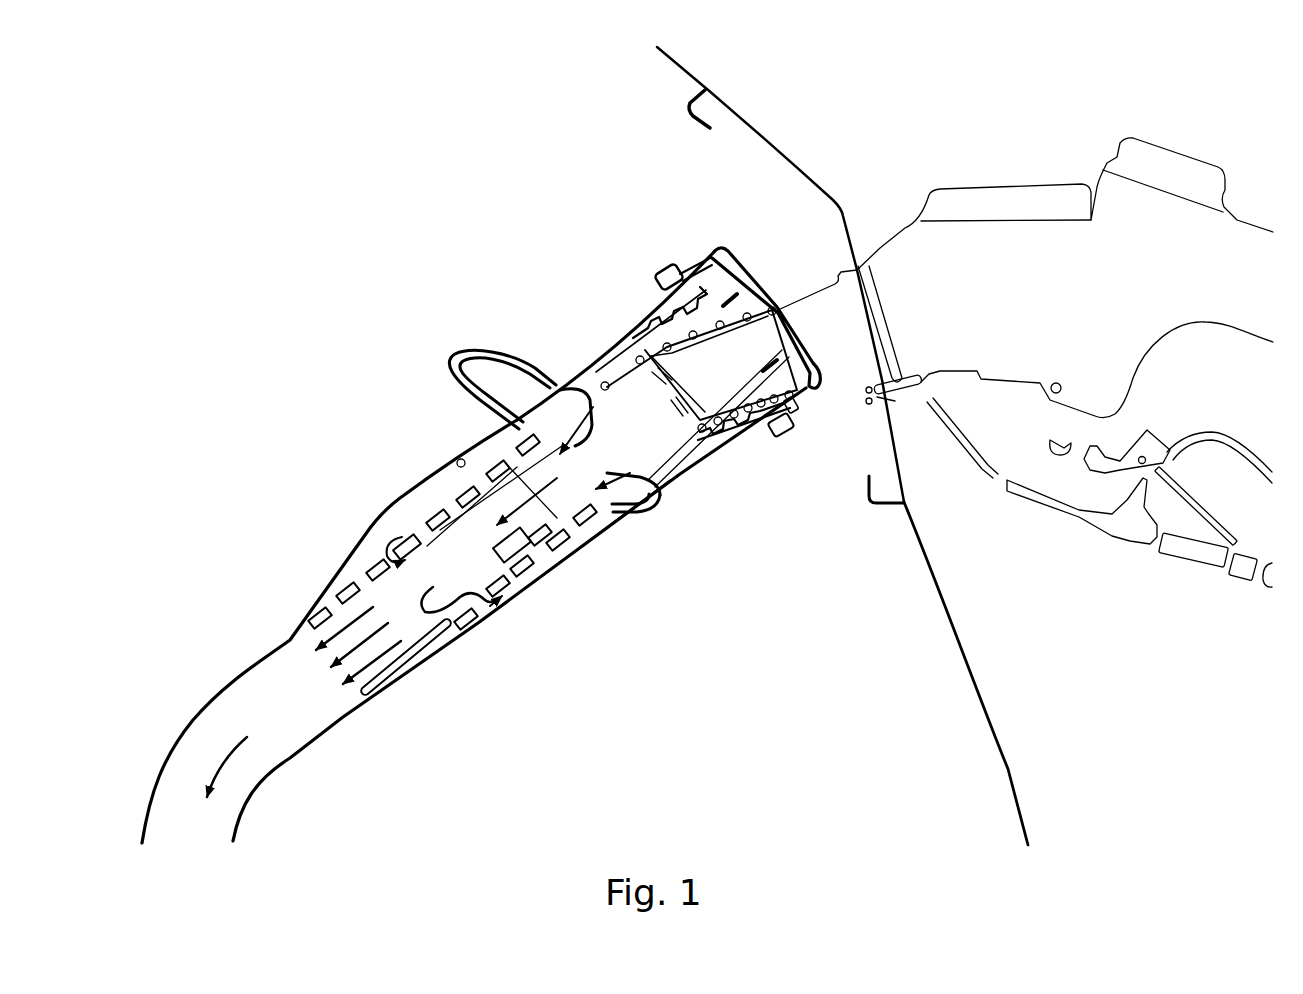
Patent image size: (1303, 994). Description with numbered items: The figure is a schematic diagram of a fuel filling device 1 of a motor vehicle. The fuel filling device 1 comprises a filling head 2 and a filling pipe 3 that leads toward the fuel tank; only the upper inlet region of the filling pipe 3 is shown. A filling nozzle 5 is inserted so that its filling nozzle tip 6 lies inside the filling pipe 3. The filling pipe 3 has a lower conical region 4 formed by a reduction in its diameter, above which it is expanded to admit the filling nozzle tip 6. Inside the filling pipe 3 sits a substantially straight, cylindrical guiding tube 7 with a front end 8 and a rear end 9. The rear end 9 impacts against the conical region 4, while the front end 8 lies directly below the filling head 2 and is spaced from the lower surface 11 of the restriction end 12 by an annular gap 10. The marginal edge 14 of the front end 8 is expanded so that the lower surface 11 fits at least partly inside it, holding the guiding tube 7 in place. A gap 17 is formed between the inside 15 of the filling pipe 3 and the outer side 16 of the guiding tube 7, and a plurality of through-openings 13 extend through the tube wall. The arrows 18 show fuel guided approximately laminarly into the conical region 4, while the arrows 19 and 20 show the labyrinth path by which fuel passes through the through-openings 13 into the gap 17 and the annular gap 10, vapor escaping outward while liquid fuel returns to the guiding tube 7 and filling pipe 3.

The fuel filling device 1 is at (326, 362).
The filling head 2 is at (614, 347).
The filling pipe 3 is at (316, 742).
The conical region 4 is at (352, 546).
The filling nozzle 5 is at (946, 314).
The filling nozzle tip 6 is at (586, 470).
The guiding tube 7 is at (422, 662).
The front end 8 is at (634, 503).
The rear end 9 is at (314, 609).
The annular gap 10 is at (676, 486).
The lower surface 11 is at (592, 364).
The restriction end 12 is at (703, 451).
The through-openings 13 is at (420, 530).
The marginal edge 14 is at (553, 384).
The inside of the filling pipe 15 is at (458, 460).
The outer side of the guiding tube 16 is at (491, 462).
The gap 17 is at (440, 500).
The arrows 18 is at (318, 631).
The arrows 19 is at (428, 545).
The arrows 20 is at (608, 472).